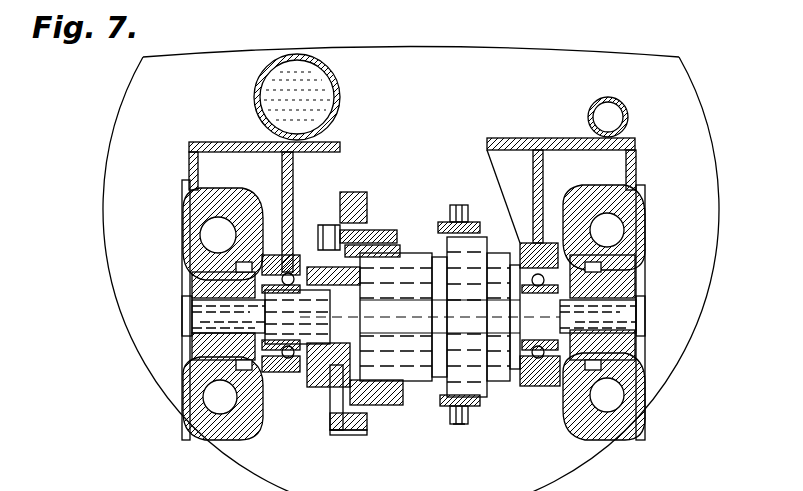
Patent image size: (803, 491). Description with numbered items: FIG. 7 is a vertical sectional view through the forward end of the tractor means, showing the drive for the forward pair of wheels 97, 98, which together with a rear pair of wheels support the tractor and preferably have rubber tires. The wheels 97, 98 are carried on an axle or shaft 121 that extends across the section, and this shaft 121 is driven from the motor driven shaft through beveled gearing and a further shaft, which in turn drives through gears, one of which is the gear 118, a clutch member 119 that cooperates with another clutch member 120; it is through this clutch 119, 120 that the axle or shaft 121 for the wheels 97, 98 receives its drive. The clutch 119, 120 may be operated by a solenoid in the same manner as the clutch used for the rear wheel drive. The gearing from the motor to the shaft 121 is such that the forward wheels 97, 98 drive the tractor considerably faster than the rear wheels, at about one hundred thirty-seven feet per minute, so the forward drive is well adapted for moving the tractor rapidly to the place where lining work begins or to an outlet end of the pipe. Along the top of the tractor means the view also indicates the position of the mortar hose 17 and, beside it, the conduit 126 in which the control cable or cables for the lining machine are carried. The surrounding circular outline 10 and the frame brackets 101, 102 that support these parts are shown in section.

The housing boundary 10 is at (700, 104).
The mortar hose 17 is at (341, 104).
The forward wheel 97 is at (645, 232).
The forward wheel 98 is at (183, 238).
The bracket 101 is at (505, 138).
The bracket 102 is at (329, 152).
The gear 118 is at (347, 437).
The clutch member 119 is at (390, 406).
The clutch member 120 is at (482, 400).
The axle or shaft 121 is at (200, 336).
The conduit 126 is at (596, 102).